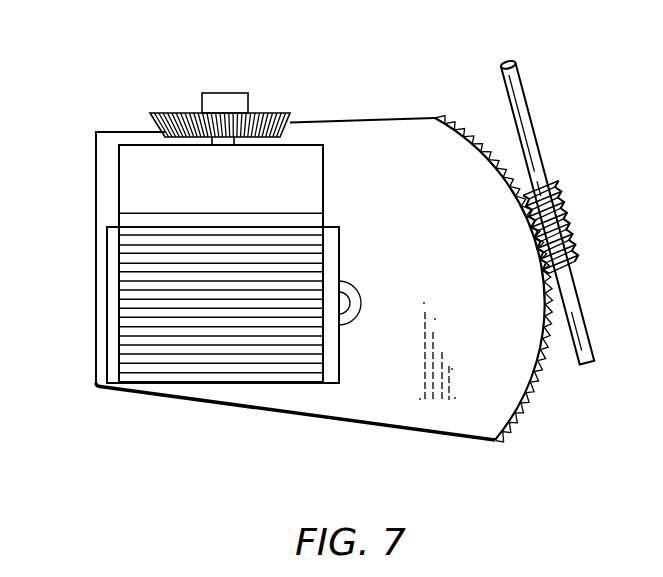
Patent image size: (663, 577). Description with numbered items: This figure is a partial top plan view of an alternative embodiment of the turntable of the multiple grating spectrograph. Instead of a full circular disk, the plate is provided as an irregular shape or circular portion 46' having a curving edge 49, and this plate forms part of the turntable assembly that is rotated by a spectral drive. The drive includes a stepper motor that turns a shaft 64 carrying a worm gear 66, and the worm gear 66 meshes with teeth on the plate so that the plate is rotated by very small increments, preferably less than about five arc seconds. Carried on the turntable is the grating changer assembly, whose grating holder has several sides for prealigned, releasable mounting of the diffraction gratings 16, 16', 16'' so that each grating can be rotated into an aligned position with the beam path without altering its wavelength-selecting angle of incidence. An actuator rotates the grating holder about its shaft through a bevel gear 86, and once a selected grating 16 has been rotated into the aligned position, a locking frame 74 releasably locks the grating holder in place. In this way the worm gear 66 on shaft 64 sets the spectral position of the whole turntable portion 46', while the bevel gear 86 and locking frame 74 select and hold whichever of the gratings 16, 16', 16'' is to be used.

The battery pack 16 is at (255, 298).
The battery pack bottom wall 16' is at (230, 415).
The battery pack side wall 16'' is at (87, 343).
The housing 46' is at (320, 247).
The rack gear teeth 49 is at (533, 367).
The drive rod 64 is at (530, 147).
The worm gear 66 is at (568, 210).
The inner compartment 74 is at (157, 182).
The brush 86 is at (188, 113).